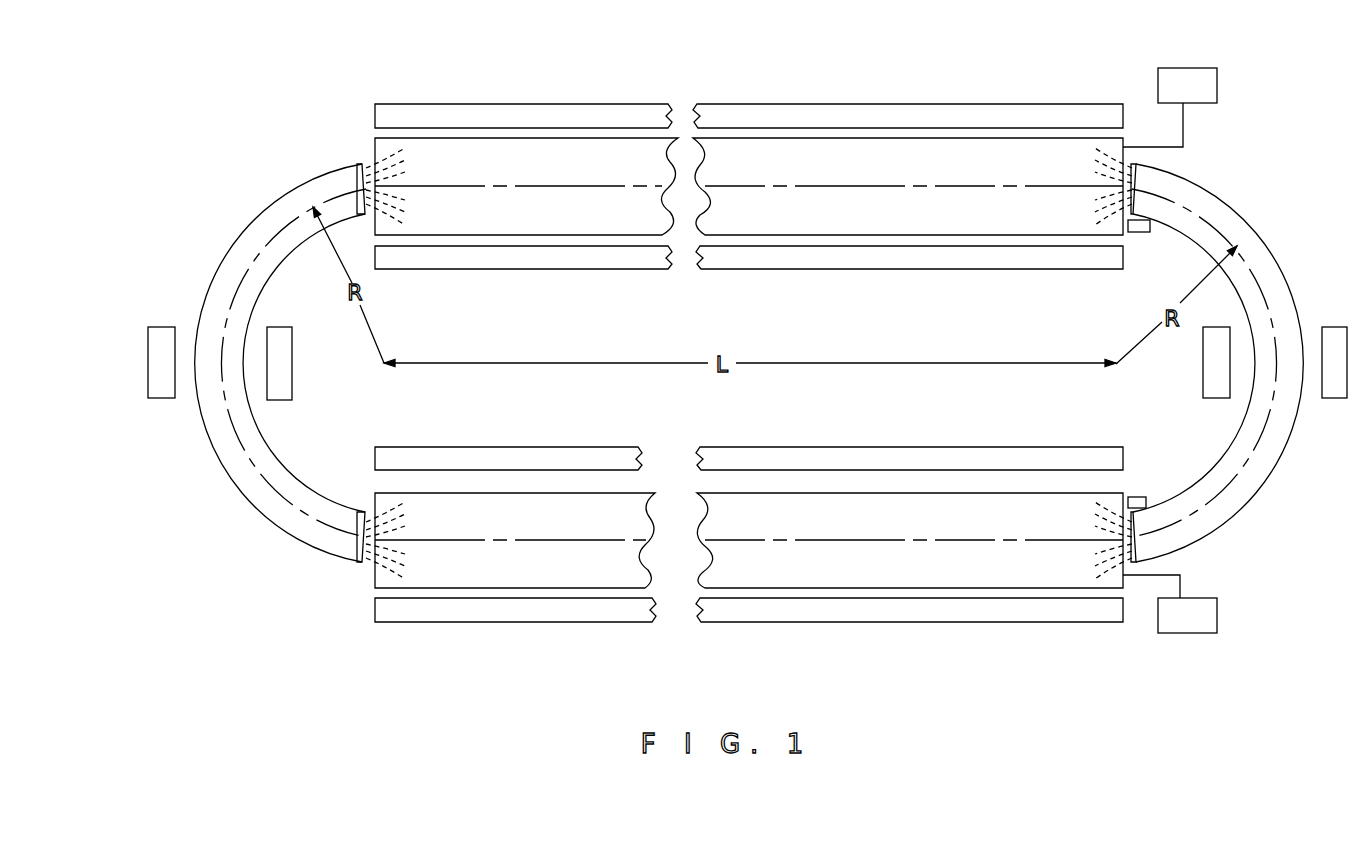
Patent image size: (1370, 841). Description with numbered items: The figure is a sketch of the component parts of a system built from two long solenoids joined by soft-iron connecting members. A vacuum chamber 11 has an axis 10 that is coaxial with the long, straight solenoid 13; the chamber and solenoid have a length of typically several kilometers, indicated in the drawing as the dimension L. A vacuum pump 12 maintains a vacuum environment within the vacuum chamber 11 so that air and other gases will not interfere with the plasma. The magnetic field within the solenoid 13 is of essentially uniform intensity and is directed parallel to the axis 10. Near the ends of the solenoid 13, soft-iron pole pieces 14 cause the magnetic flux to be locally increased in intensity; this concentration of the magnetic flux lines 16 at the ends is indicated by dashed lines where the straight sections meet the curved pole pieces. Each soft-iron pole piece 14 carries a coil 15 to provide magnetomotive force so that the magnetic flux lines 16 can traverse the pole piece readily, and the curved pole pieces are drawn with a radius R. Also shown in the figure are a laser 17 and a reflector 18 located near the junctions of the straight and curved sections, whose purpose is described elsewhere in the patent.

The axis 10 is at (447, 183).
The vacuum chamber 11 is at (482, 137).
The vacuum pump 12 is at (1217, 88).
The solenoid 13 is at (544, 104).
The soft-iron pole piece 14 is at (260, 212).
The coil 15 is at (161, 327).
The magnetic flux lines 16 is at (1133, 162).
The laser 17 is at (1140, 232).
The reflector 18 is at (366, 217).